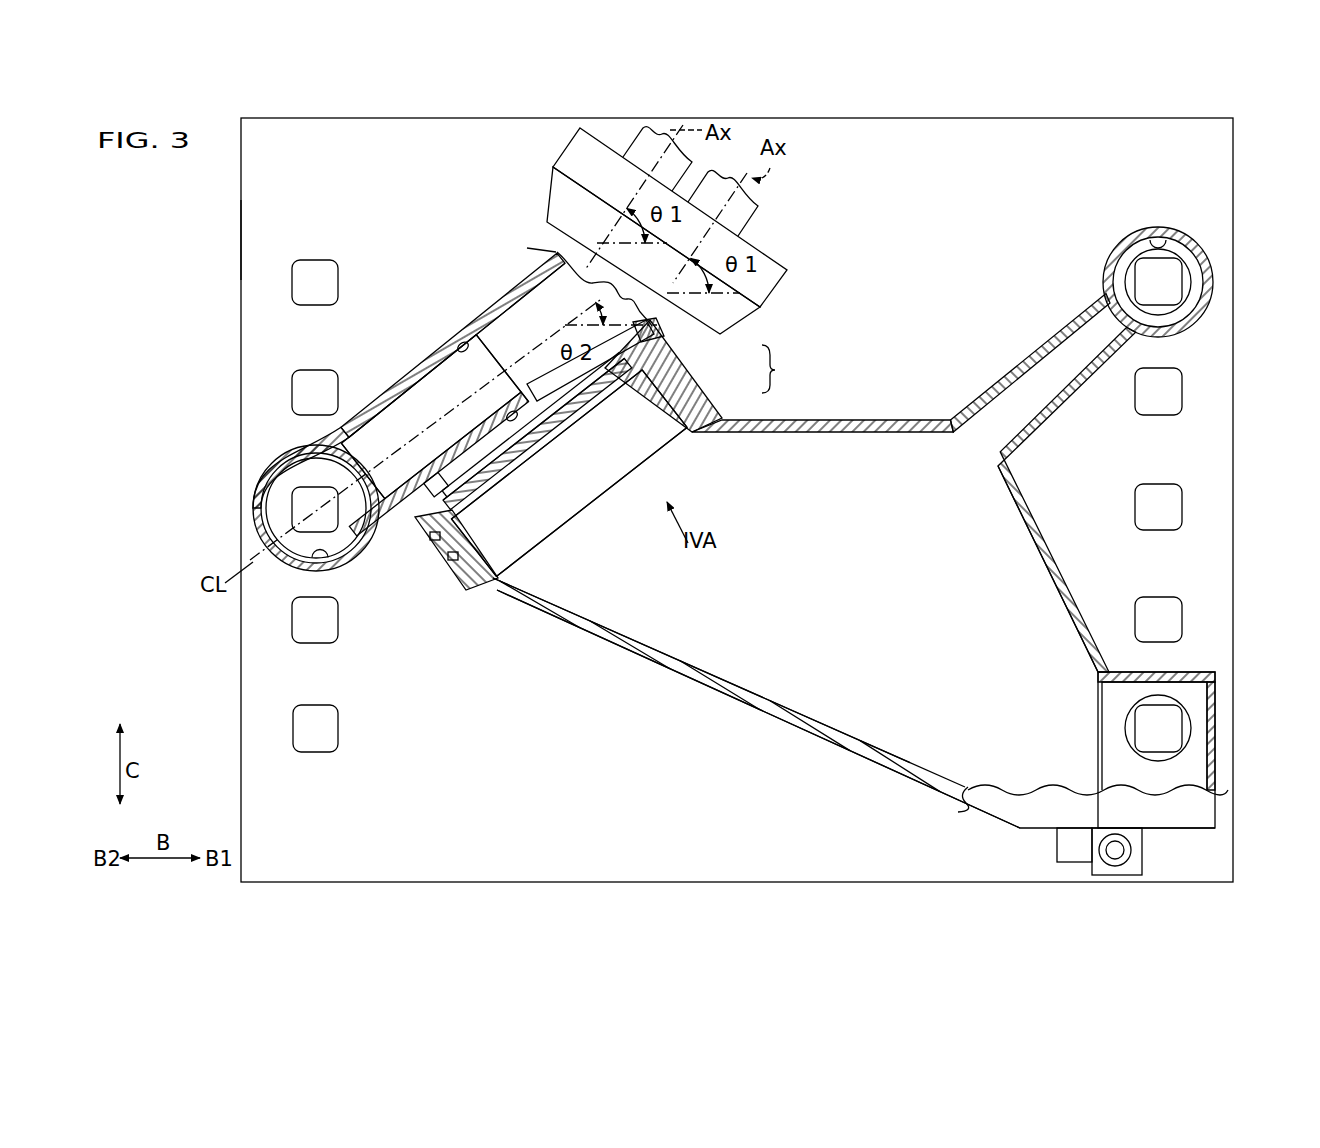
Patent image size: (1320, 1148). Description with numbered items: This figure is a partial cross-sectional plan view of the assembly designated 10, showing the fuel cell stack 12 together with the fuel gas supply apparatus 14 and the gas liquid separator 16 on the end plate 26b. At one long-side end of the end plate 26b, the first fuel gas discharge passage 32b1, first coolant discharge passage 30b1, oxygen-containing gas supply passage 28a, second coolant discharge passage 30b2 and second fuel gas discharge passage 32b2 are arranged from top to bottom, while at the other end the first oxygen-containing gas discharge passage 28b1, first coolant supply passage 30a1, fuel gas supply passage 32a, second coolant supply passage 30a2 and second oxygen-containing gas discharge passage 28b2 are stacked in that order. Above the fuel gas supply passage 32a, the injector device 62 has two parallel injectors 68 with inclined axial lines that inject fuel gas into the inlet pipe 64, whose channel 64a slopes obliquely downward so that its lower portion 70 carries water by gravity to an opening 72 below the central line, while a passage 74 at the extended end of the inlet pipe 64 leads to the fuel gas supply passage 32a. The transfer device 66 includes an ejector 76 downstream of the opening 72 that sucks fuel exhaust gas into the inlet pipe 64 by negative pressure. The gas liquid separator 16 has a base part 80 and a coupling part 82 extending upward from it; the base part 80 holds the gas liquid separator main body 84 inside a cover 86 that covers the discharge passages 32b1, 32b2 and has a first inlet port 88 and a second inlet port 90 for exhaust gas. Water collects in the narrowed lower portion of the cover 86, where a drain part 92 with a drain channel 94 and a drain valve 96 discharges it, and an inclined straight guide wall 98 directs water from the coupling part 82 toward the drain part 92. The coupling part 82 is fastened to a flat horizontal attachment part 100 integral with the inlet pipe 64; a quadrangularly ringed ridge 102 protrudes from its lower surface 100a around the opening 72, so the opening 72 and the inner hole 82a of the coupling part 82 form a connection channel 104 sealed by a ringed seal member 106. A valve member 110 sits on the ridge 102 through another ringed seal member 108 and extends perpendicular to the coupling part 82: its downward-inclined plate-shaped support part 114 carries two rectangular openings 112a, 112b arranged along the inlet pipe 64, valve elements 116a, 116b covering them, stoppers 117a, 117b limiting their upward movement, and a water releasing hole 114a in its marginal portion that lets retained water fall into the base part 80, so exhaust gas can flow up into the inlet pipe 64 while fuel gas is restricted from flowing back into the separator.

The bicycle 10 is at (191, 187).
The fuel cell stack 12 is at (1242, 132).
The battery unit 14 is at (533, 172).
The gas liquid separator 16 is at (763, 714).
The end plate 26b is at (256, 237).
The oxygen-containing gas supply passage 28a is at (1172, 506).
The first oxygen-containing gas discharge passage 28b1 is at (305, 290).
The second oxygen-containing gas discharge passage 28b2 is at (305, 730).
The first coolant supply passage 30a1 is at (305, 395).
The second coolant supply passage 30a2 is at (305, 620).
The first coolant discharge passage 30b1 is at (1172, 388).
The second coolant discharge passage 30b2 is at (1172, 618).
The fuel gas supply passage 32a is at (305, 515).
The first fuel gas discharge passage 32b1 is at (1172, 281).
The second fuel gas discharge passage 32b2 is at (1172, 728).
The injector device 62 is at (788, 184).
The inlet pipe 64 is at (505, 292).
The channel 64a is at (530, 303).
The transfer device 66 is at (396, 398).
The injectors 68 is at (675, 173).
The lower portion 70 is at (617, 327).
The opening 72 is at (652, 340).
The passage 74 is at (340, 556).
The ejector 76 is at (360, 415).
The base part 80 is at (641, 658).
The coupling part 82 is at (440, 580).
The inner hole 82a is at (650, 407).
The gas liquid separator main body 84 is at (1000, 538).
The cover 86 is at (1015, 482).
The first inlet port 88 is at (1152, 243).
The second inlet port 90 is at (1190, 715).
The drain part 92 is at (1160, 846).
The drain channel 94 is at (1122, 852).
The drain valve 96 is at (1068, 843).
The guide wall 98 is at (732, 684).
The attachment part 100 is at (457, 407).
The lower surface 100a is at (413, 410).
The ridge 102 is at (435, 537).
The connection channel 104 is at (789, 369).
The ringed seal member 106 is at (433, 513).
The ringed seal member 108 is at (453, 557).
The valve member 110 is at (570, 462).
The opening 112a is at (590, 404).
The opening 112b is at (517, 480).
The support part 114 is at (562, 452).
The water releasing hole 114a is at (487, 575).
The valve element 116a is at (650, 405).
The valve element 116b is at (498, 483).
The stopper 117a is at (597, 420).
The stopper 117b is at (515, 473).